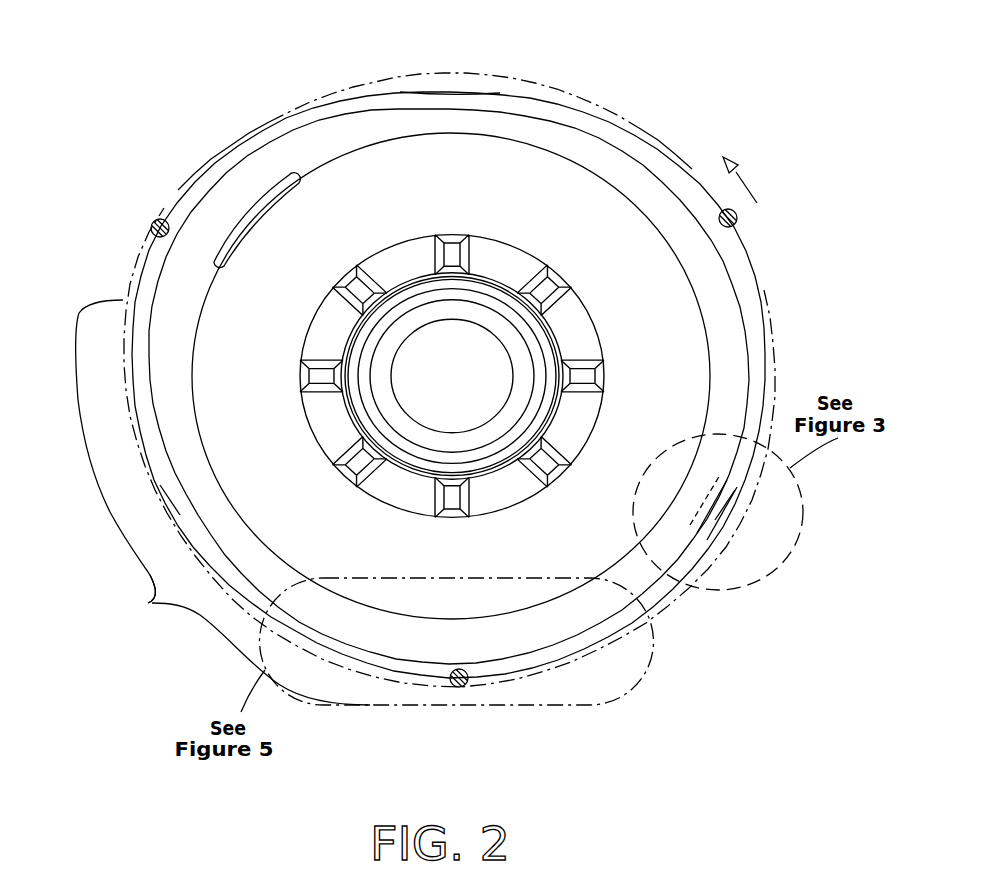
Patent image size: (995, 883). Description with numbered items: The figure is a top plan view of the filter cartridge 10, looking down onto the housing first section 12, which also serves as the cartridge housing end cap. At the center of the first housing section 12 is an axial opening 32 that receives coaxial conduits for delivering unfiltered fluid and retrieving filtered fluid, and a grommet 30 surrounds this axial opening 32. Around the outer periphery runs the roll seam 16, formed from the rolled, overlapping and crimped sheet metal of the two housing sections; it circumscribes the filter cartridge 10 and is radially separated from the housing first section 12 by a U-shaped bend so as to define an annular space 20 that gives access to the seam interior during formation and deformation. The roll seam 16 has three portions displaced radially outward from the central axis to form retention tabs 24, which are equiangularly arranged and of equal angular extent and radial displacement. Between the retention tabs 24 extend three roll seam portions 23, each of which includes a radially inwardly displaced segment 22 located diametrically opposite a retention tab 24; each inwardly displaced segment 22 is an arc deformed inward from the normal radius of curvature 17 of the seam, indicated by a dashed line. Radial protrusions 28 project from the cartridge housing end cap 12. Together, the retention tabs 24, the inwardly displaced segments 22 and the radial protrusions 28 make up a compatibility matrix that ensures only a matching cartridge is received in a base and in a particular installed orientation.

The filter cartridge 10 is at (598, 62).
The housing first section 12 is at (573, 220).
The roll seam 16 is at (121, 354).
The normal radius of curvature 17 is at (740, 498).
The annular space 20 is at (332, 140).
The inwardly displaced segment 22 is at (436, 92).
The roll seam portion 23 is at (150, 601).
The retention tab 24 is at (158, 218).
The radial protrusion 28 is at (262, 200).
The grommet 30 is at (582, 419).
The axial opening 32 is at (405, 398).